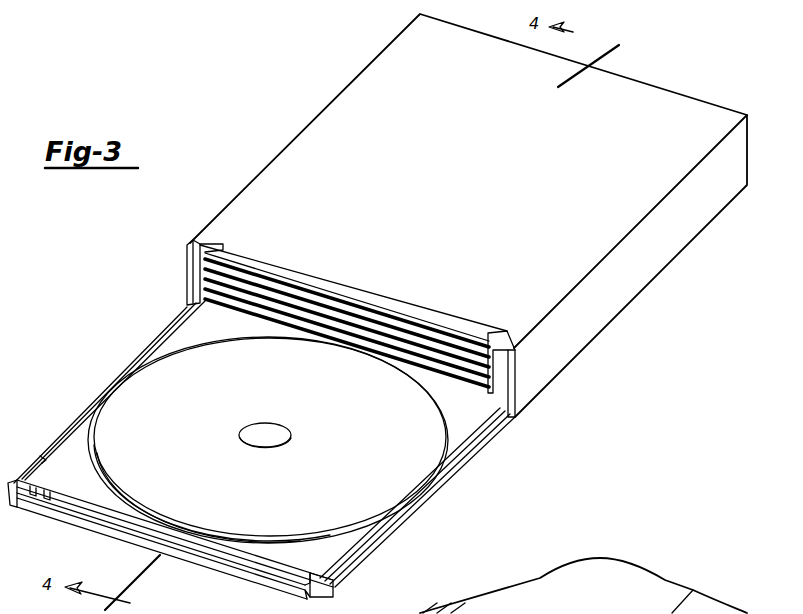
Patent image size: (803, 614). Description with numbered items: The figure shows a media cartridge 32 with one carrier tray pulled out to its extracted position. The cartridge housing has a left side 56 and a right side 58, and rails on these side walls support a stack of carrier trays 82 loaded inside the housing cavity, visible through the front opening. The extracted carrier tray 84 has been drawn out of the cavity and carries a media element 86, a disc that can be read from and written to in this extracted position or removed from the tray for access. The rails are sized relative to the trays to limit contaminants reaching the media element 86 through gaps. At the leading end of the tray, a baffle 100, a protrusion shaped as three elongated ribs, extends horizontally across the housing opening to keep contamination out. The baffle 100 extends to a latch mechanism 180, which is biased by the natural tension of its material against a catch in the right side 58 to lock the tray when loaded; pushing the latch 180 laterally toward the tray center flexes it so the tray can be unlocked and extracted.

The media cartridge 32 is at (467, 215).
The left side 56 is at (273, 158).
The right side 58 is at (623, 296).
The carrier trays 82 is at (462, 350).
The extracted carrier tray 84 is at (462, 416).
The media element 86 is at (276, 444).
The baffle 100 is at (282, 557).
The latch mechanism 180 is at (334, 587).